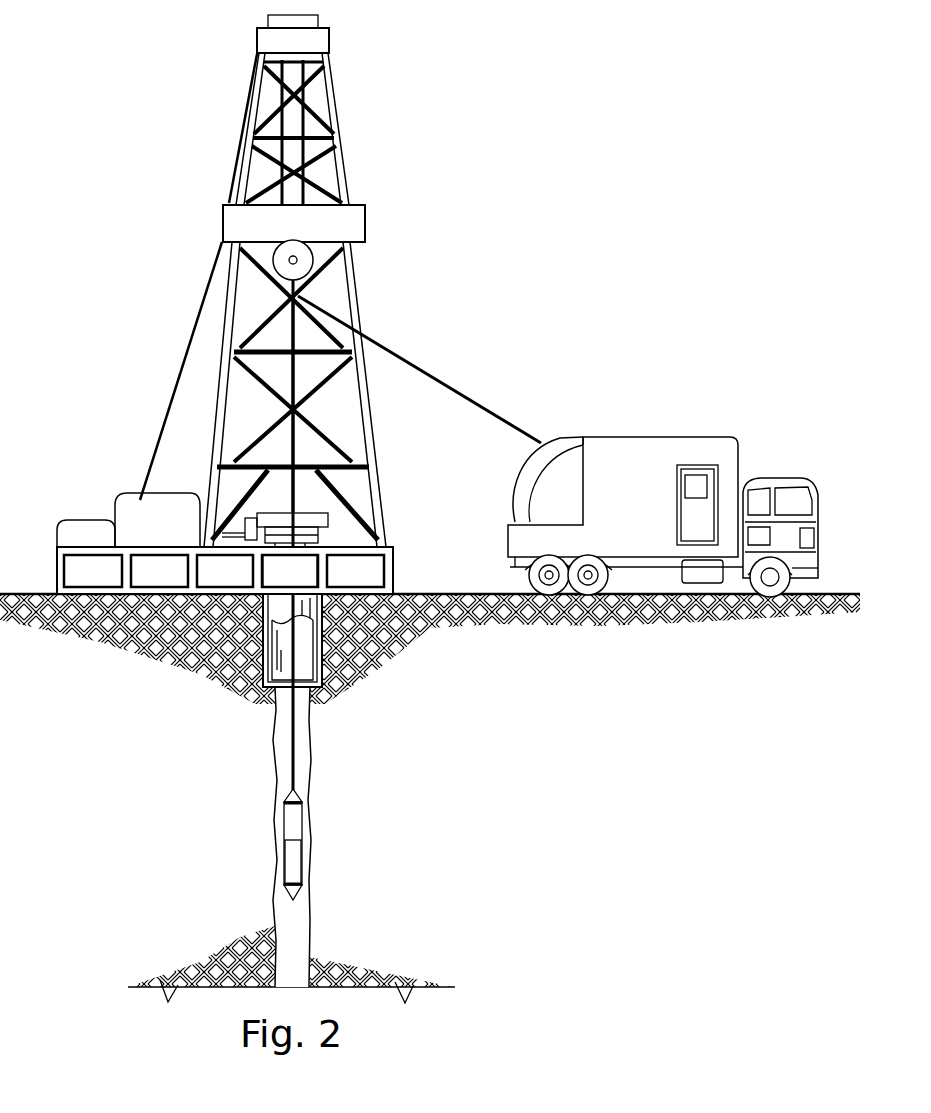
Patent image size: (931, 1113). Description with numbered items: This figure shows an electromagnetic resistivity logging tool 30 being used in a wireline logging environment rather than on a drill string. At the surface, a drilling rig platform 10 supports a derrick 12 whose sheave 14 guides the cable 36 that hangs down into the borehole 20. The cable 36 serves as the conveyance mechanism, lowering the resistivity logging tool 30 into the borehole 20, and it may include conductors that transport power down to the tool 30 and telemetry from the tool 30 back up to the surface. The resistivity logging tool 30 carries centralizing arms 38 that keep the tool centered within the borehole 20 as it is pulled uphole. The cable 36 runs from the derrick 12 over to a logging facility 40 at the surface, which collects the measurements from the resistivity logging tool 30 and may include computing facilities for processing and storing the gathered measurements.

The drilling rig platform 10 is at (394, 568).
The derrick 12 is at (350, 92).
The sheave / pulley 14 is at (285, 276).
The borehole 20 is at (282, 772).
The resistivity logging tool 30 is at (312, 818).
The cable 36 is at (432, 373).
The centralizing arms 38 is at (308, 862).
The logging facility 40 is at (694, 436).